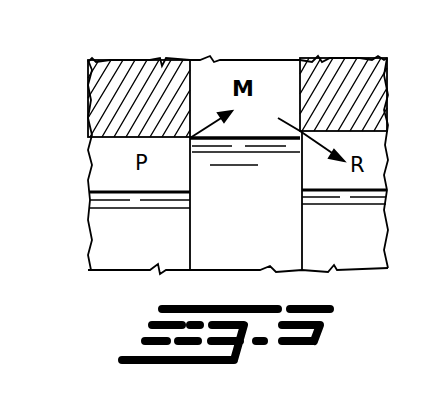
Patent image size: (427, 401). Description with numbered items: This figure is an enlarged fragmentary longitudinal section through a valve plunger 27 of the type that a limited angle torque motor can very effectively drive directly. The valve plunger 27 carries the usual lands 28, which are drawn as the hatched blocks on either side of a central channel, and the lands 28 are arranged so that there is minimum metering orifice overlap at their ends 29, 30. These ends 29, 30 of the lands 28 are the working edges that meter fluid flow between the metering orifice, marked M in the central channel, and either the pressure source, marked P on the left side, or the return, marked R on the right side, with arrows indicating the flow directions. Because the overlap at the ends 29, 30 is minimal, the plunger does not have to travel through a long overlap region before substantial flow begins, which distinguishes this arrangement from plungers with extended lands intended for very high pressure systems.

The valve plunger 27 is at (104, 252).
The lands 28 is at (262, 150).
The end of land 29 is at (188, 158).
The end of land 30 is at (303, 166).